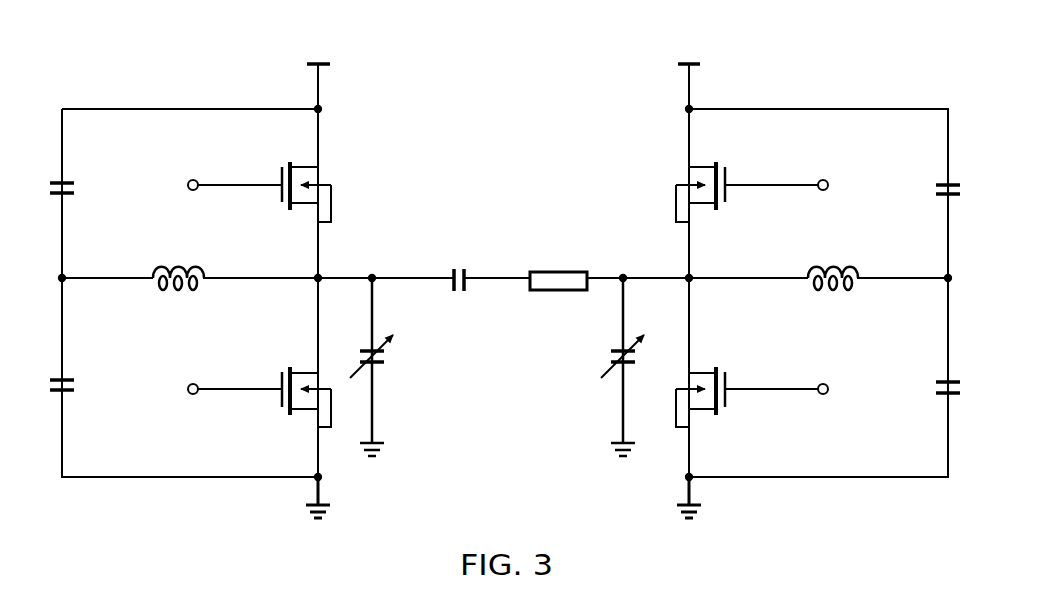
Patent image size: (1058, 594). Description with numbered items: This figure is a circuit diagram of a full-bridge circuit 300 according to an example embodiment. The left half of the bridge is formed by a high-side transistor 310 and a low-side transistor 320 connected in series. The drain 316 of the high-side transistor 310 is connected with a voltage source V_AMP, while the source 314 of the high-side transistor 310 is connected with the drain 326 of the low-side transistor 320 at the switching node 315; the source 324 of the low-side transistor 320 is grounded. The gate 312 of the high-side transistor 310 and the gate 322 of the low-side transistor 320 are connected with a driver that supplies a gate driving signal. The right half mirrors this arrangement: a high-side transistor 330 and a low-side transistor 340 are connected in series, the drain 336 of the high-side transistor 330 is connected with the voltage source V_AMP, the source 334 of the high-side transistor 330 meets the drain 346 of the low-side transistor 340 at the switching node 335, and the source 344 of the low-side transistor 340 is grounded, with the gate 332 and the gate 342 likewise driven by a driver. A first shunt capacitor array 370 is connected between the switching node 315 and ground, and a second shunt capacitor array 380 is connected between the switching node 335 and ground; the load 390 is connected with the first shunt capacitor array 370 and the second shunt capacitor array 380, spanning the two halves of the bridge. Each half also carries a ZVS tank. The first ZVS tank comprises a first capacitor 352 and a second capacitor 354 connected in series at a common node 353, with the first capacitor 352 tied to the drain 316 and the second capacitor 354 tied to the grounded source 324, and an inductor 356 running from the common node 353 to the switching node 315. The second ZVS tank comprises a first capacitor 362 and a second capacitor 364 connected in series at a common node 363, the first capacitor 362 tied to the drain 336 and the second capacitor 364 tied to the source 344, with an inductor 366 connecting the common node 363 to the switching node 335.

The full-bridge circuit 300 is at (237, 33).
The high-side transistor 310 is at (351, 162).
The gate 312 is at (172, 171).
The source 314 is at (300, 220).
The switching node 315 is at (334, 271).
The drain 316 is at (298, 153).
The low-side transistor 320 is at (344, 440).
The gate 322 is at (185, 379).
The source 324 is at (300, 430).
The drain 326 is at (297, 360).
The high-side transistor 330 is at (667, 162).
The gate 332 is at (837, 175).
The source 334 is at (701, 219).
The switching node 335 is at (672, 271).
The drain 336 is at (704, 152).
The low-side transistor 340 is at (667, 441).
The gate 342 is at (839, 384).
The source 344 is at (705, 425).
The drain 346 is at (704, 360).
The first capacitor 352 is at (88, 192).
The common node 353 is at (75, 292).
The second capacitor 354 is at (88, 390).
The inductor 356 is at (179, 257).
The first capacitor 362 is at (925, 214).
The common node 363 is at (936, 300).
The second capacitor 364 is at (927, 407).
The inductor 366 is at (830, 261).
The first shunt capacitor array 370 is at (410, 356).
The second shunt capacitor array 380 is at (600, 357).
The load 390 is at (538, 302).